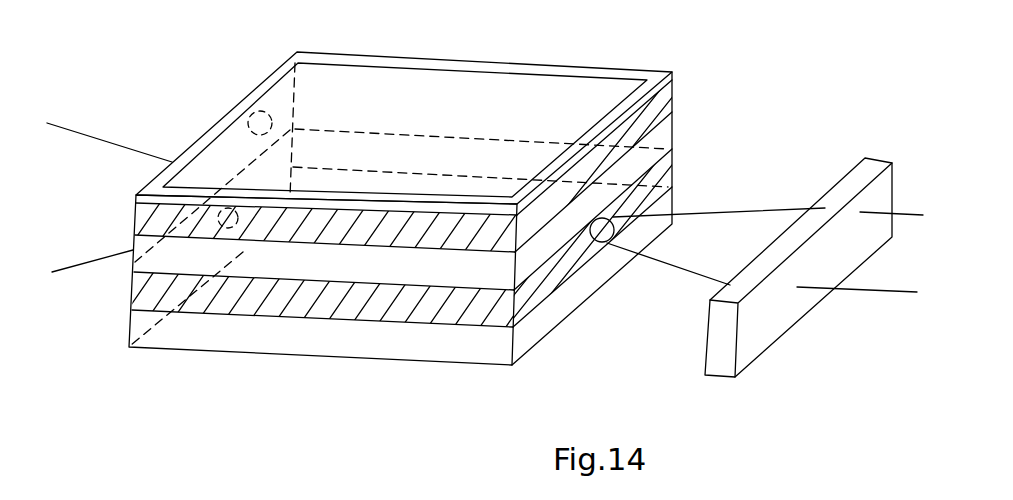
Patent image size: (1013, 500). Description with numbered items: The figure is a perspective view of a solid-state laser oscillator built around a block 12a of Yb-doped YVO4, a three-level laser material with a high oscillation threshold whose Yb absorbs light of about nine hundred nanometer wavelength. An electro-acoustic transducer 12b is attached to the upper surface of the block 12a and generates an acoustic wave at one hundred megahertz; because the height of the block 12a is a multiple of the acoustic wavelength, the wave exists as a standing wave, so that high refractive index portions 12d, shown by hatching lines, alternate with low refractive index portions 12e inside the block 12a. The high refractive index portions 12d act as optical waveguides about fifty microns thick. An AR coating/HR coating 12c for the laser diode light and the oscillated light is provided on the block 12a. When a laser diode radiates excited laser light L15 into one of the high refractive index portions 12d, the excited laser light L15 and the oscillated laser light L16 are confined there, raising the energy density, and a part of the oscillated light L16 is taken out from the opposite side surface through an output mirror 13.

The block 12a is at (641, 67).
The electro-acoustic transducer 12b is at (457, 97).
The AR coating/HR coating 12c is at (264, 111).
The high refractive index portions 12d is at (673, 92).
The low refractive index portions 12e is at (663, 135).
The output mirror 13 is at (862, 170).
The excited laser light L15 is at (101, 205).
The oscillated laser light L16 is at (917, 255).